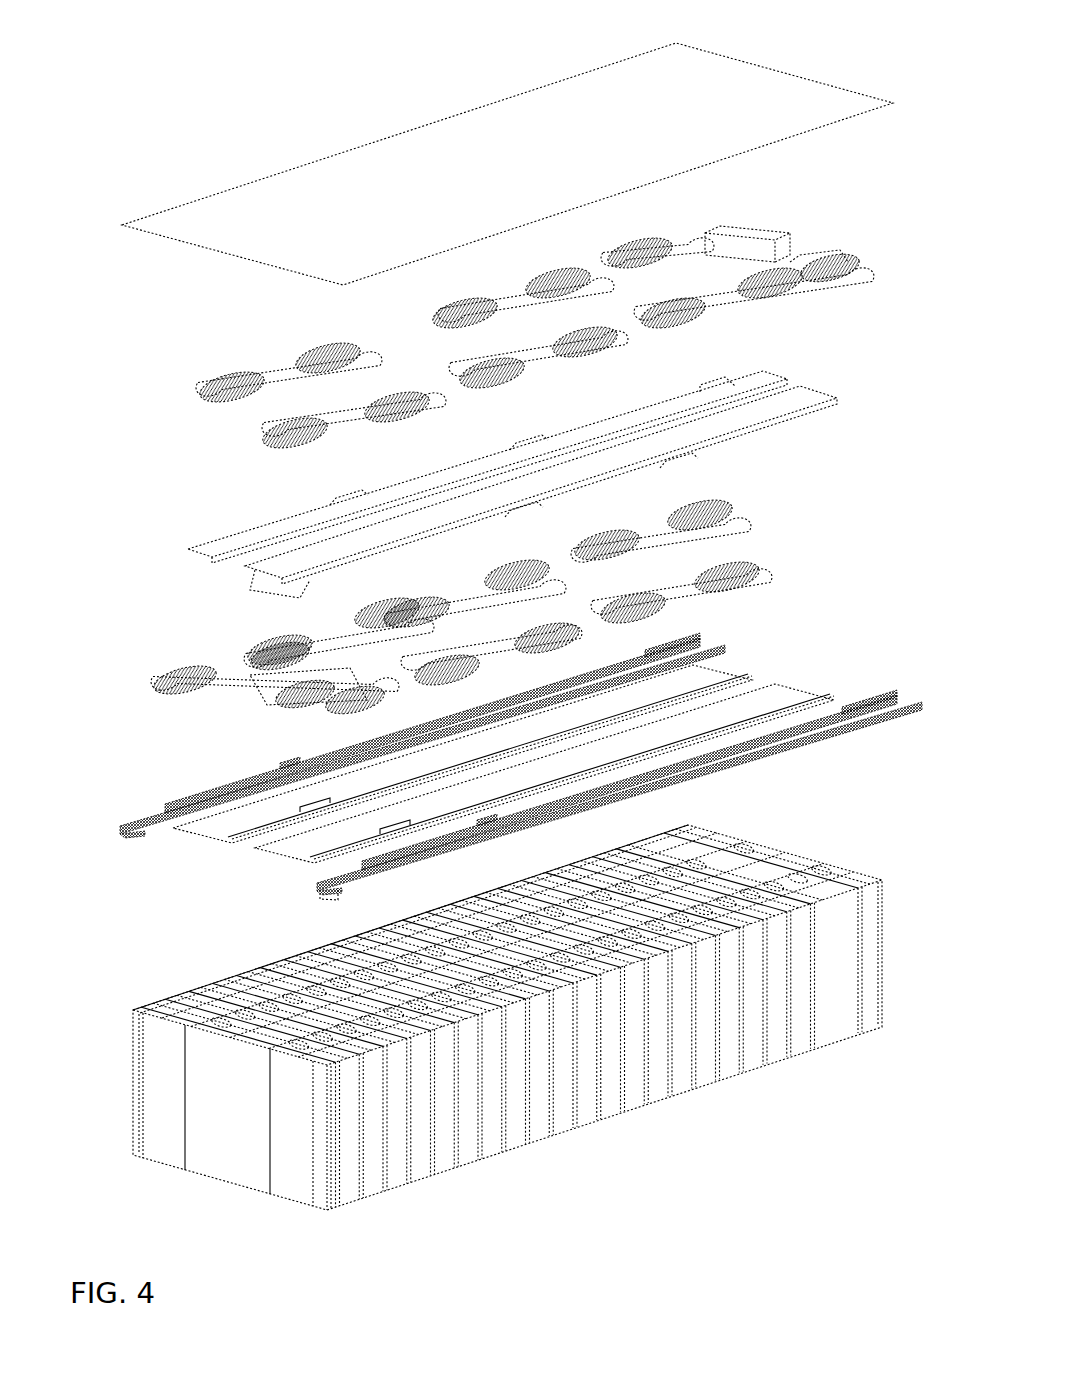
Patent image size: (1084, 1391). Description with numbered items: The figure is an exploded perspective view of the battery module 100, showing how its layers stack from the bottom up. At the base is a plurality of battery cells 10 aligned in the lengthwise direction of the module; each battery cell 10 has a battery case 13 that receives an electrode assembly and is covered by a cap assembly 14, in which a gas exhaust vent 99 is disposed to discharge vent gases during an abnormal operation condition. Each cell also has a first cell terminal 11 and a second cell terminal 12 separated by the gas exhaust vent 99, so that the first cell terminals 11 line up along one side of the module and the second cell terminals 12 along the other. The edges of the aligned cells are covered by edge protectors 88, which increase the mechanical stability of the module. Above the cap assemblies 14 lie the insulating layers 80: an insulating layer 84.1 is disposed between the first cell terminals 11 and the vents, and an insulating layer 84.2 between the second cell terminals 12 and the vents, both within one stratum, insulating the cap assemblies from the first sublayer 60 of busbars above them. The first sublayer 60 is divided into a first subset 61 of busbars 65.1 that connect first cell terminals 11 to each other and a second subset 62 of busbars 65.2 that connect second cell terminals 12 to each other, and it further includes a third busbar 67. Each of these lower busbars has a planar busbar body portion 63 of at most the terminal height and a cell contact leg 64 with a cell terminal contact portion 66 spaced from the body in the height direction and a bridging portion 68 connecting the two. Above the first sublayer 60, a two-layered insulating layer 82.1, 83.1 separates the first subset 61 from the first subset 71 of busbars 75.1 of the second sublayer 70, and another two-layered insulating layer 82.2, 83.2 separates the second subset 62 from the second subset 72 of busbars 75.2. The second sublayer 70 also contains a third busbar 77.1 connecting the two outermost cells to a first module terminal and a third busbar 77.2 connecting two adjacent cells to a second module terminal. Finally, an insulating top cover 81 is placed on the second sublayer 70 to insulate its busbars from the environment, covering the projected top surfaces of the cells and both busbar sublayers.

The battery module 100 is at (185, 118).
The insulating layers 80 is at (804, 78).
The insulating top cover 81 is at (507, 164).
The insulating layer 82.1 is at (772, 350).
The insulating layer 82.2 is at (835, 388).
The insulating layer 83.1 is at (487, 467).
The insulating layer 83.2 is at (541, 492).
The insulating layer 84.1 is at (736, 662).
The insulating layer 84.2 is at (804, 681).
The edge protector 88 is at (128, 832).
The second sublayer of busbars 70 is at (333, 449).
The first subset of busbars 71 is at (808, 233).
The second subset of busbars 72 is at (885, 258).
The busbar 75.1 is at (302, 382).
The busbar 75.2 is at (345, 410).
The third busbar 77.1 is at (720, 244).
The third busbar 77.2 is at (864, 280).
The first sublayer of busbars 60 is at (283, 725).
The first subset of busbars 61 is at (773, 518).
The second subset of busbars 62 is at (850, 546).
The busbar body portion 63 is at (710, 540).
The cell contact leg 64 is at (560, 548).
The busbar 65.1 is at (350, 650).
The busbar 65.2 is at (667, 587).
The cell terminal contact portion 66 is at (603, 538).
The third busbar 67 is at (258, 687).
The bridging portion 68 is at (597, 558).
The battery cell 10 is at (728, 1060).
The first cell terminal 11 is at (640, 858).
The second cell terminal 12 is at (780, 898).
The battery case 13 is at (252, 1115).
The cap assembly 14 is at (207, 1022).
The gas exhaust vent 99 is at (778, 862).